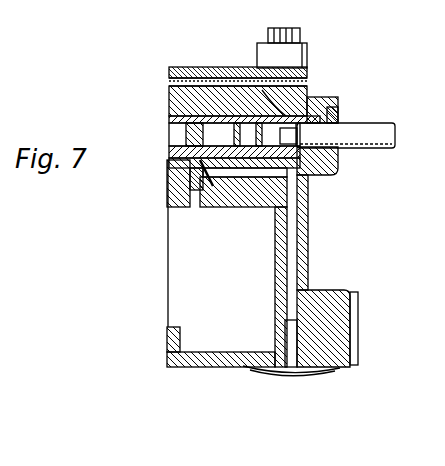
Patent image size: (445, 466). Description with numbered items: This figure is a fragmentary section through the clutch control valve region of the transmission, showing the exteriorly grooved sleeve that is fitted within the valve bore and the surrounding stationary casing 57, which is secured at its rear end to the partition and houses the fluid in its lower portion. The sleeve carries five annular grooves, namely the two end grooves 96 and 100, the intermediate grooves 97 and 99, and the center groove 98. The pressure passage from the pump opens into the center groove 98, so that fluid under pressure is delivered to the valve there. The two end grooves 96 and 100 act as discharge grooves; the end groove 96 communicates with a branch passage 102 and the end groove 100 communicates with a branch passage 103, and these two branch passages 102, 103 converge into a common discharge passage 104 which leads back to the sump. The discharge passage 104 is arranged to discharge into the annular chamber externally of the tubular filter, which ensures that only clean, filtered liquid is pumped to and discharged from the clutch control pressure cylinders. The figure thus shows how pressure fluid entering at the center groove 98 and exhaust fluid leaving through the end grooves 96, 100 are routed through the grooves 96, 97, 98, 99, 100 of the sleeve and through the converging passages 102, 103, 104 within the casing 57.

The stationary casing 57 is at (172, 102).
The end groove 96 is at (308, 95).
The annular groove 97 is at (262, 92).
The center groove 98 is at (235, 110).
The annular groove 99 is at (205, 95).
The end groove 100 is at (200, 107).
The branch passage 102 is at (297, 168).
The branch passage 103 is at (211, 188).
The common discharge passage 104 is at (292, 260).